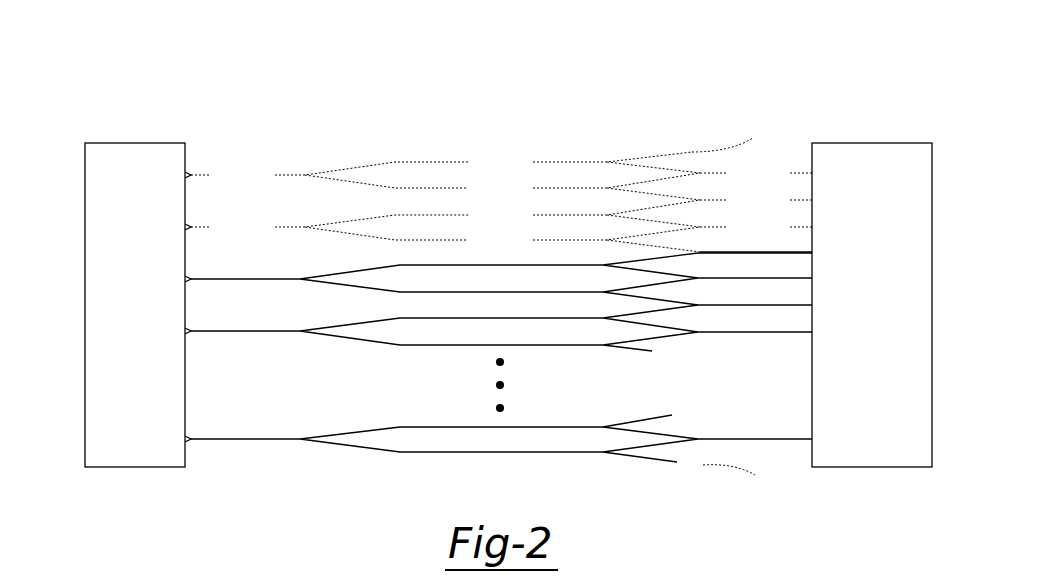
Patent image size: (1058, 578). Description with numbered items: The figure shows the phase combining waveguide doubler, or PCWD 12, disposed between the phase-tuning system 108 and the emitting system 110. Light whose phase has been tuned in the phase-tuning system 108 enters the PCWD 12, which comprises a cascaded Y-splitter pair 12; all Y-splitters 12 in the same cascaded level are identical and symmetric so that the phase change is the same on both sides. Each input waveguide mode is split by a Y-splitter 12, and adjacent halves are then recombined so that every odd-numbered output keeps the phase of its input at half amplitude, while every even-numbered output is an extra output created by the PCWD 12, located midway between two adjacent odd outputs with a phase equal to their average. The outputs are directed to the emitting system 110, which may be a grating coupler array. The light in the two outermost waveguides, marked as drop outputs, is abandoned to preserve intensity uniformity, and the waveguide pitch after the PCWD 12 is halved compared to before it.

The phase combining waveguide doubler 12 is at (608, 98).
The phase-tuning system 108 is at (123, 143).
The emitting system 110 is at (883, 143).